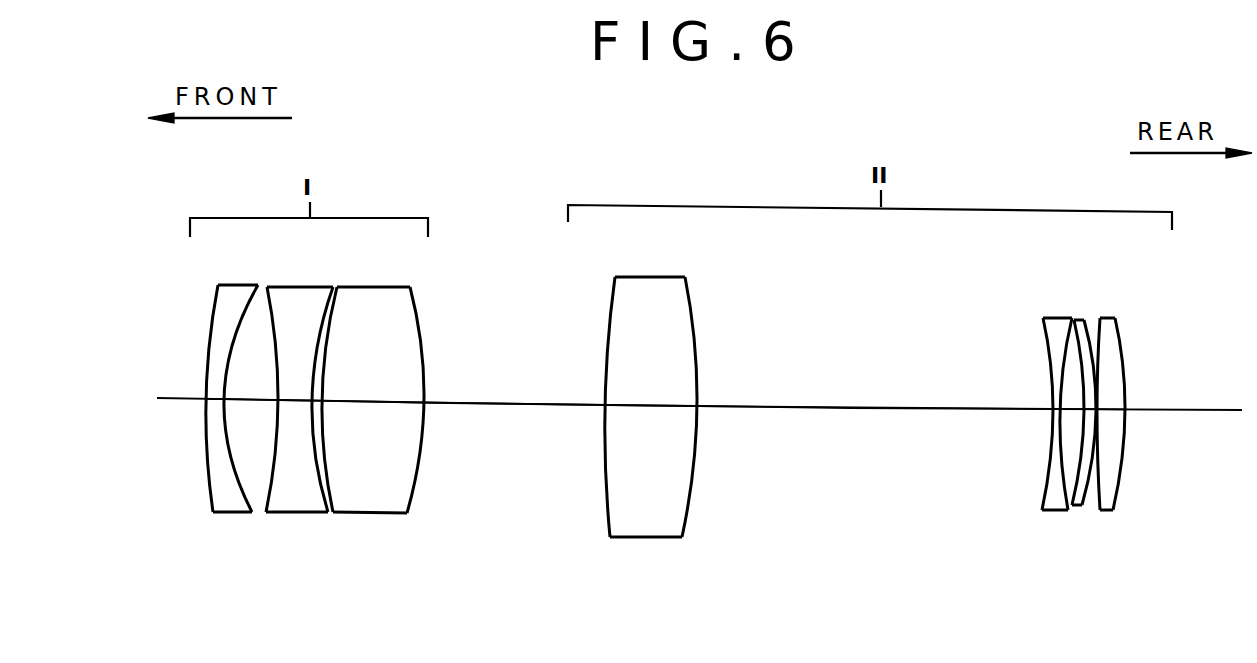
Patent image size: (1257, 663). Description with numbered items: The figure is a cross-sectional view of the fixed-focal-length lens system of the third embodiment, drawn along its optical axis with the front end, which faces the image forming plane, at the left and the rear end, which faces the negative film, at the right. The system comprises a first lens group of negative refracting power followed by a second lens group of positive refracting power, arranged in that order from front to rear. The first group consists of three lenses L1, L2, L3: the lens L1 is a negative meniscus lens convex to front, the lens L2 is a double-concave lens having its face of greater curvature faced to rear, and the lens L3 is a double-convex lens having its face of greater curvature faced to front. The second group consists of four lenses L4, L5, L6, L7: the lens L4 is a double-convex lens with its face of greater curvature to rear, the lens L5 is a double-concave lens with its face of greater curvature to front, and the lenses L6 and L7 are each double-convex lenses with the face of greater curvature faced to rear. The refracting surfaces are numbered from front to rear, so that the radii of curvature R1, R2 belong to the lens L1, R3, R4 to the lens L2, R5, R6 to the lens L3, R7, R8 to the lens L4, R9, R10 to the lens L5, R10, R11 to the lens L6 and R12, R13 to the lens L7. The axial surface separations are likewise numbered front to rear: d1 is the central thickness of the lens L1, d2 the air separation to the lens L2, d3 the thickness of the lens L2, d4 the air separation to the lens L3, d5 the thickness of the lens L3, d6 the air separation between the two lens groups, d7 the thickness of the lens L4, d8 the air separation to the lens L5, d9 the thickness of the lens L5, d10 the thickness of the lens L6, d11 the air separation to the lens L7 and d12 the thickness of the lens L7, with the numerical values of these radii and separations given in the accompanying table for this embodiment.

The lens L1 is at (207, 417).
The lens L2 is at (319, 418).
The lens L3 is at (404, 396).
The lens L4 is at (653, 390).
The lens L5 is at (1074, 402).
The lens L6 is at (1133, 399).
The lens L7 is at (1169, 378).
The radius of curvature R1 is at (210, 492).
The radius of curvature R2 is at (240, 487).
The radius of curvature R3 is at (278, 487).
The radius of curvature R4 is at (315, 497).
The radius of curvature R5 is at (337, 492).
The radius of curvature R6 is at (417, 482).
The radius of curvature R7 is at (608, 512).
The radius of curvature R8 is at (688, 503).
The radius of curvature R9 is at (1045, 497).
The radius of curvature R10 is at (1068, 487).
The radius of curvature R11 is at (1085, 485).
The radius of curvature R12 is at (1098, 465).
The radius of curvature R13 is at (1123, 442).
The axial surface separation d1 is at (218, 400).
The axial surface separation d2 is at (250, 402).
The axial surface separation d3 is at (298, 402).
The axial surface separation d4 is at (318, 403).
The axial surface separation d5 is at (385, 401).
The axial surface separation d6 is at (487, 403).
The axial surface separation d7 is at (665, 406).
The axial surface separation d8 is at (847, 407).
The axial surface separation d9 is at (1058, 407).
The axial surface separation d10 is at (1075, 408).
The axial surface separation d11 is at (1093, 408).
The axial surface separation d12 is at (1113, 410).